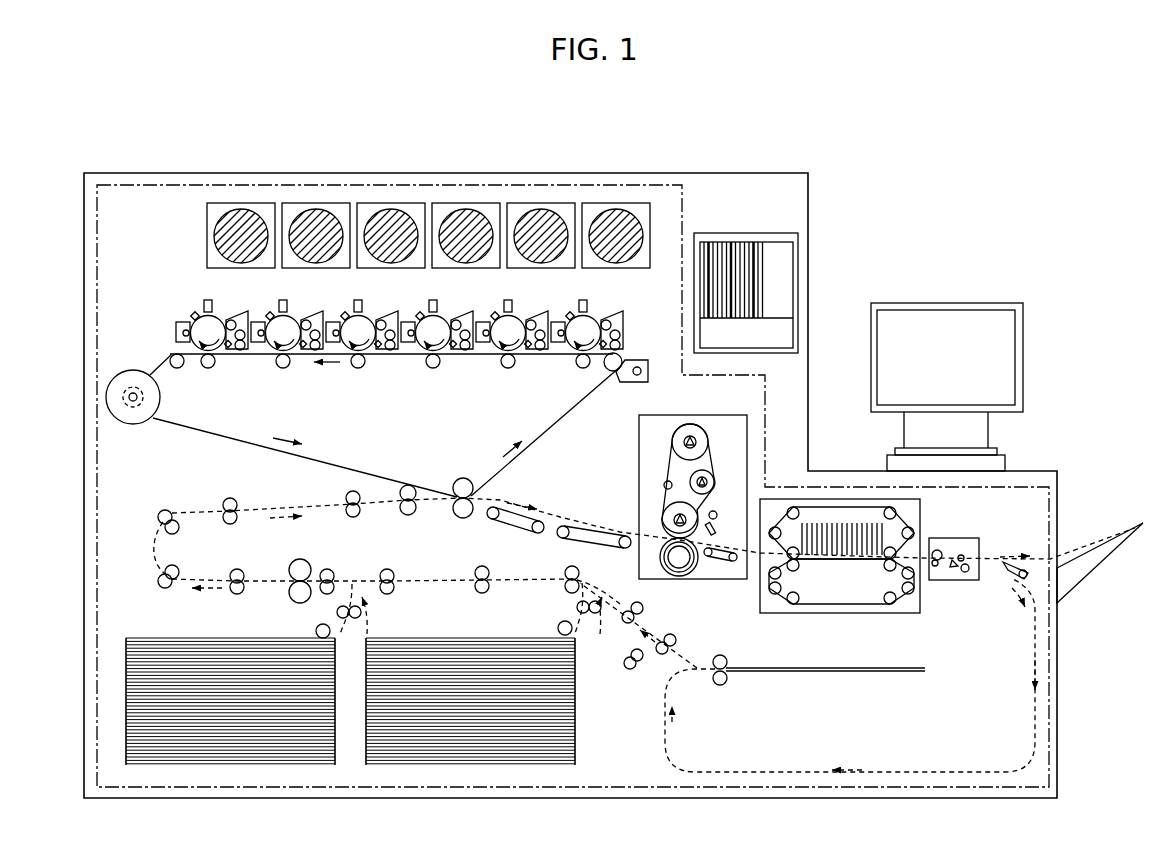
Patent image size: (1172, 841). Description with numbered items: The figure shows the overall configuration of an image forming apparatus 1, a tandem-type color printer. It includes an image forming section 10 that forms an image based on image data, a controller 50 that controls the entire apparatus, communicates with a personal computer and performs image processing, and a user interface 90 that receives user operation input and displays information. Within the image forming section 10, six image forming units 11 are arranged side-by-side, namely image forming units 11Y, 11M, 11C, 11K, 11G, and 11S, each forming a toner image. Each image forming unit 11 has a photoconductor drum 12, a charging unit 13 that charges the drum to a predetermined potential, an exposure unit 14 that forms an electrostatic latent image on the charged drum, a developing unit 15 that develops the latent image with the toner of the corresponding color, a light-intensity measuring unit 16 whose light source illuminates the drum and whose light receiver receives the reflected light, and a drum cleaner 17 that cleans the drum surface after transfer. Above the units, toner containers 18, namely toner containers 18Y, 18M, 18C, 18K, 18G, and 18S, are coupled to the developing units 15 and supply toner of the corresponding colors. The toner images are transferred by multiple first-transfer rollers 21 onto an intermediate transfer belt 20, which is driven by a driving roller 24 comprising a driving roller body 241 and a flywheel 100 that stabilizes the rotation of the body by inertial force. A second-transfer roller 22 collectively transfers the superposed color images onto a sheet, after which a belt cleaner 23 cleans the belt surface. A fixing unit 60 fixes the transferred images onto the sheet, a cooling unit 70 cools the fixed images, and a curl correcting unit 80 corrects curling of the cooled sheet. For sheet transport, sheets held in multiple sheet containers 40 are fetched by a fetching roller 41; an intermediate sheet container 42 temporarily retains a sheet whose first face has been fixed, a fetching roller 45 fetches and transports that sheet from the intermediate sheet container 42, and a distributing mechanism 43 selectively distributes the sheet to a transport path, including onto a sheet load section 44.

The image forming apparatus 1 is at (831, 157).
The image forming section 10 is at (668, 184).
The image forming units 11 is at (634, 293).
The image forming unit 11S is at (223, 311).
The image forming unit 11G is at (298, 311).
The image forming unit 11K is at (373, 311).
The image forming unit 11C is at (448, 311).
The image forming unit 11M is at (523, 311).
The image forming unit 11Y is at (598, 311).
The photoconductor drum 12 is at (570, 345).
The charging unit 13 is at (571, 312).
The exposure unit 14 is at (584, 300).
The developing unit 15 is at (622, 311).
The light-intensity measuring unit 16 is at (602, 349).
The drum cleaner 17 is at (557, 344).
The toner containers 18 is at (373, 126).
The toner container 18S is at (247, 203).
The toner container 18G is at (322, 203).
The toner container 18K is at (397, 203).
The toner container 18C is at (470, 203).
The toner container 18M is at (517, 203).
The toner container 18Y is at (632, 203).
The intermediate transfer belt 20 is at (227, 437).
The first-transfer rollers 21 is at (577, 366).
The second-transfer roller 22 is at (463, 518).
The belt cleaner 23 is at (632, 382).
The driving roller 24 is at (137, 366).
The driving roller body 241 is at (123, 388).
The flywheel 100 is at (121, 428).
The sheet containers 40 is at (153, 638).
The fetching roller 41 is at (315, 630).
The intermediate sheet container 42 is at (857, 672).
The distributing mechanism 43 is at (1010, 574).
The sheet load section 44 is at (1090, 578).
The fetching roller 45 is at (723, 655).
The controller 50 is at (746, 233).
The fixing unit 60 is at (670, 415).
The cooling unit 70 is at (836, 614).
The curl correcting unit 80 is at (954, 538).
The user interface 90 is at (947, 303).